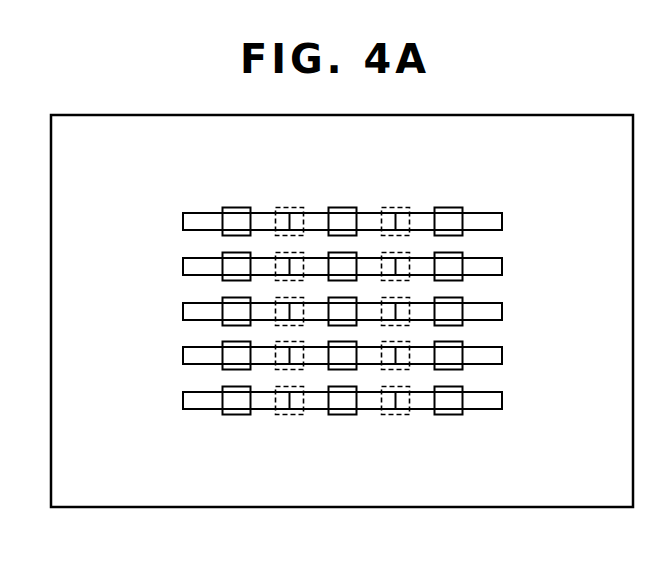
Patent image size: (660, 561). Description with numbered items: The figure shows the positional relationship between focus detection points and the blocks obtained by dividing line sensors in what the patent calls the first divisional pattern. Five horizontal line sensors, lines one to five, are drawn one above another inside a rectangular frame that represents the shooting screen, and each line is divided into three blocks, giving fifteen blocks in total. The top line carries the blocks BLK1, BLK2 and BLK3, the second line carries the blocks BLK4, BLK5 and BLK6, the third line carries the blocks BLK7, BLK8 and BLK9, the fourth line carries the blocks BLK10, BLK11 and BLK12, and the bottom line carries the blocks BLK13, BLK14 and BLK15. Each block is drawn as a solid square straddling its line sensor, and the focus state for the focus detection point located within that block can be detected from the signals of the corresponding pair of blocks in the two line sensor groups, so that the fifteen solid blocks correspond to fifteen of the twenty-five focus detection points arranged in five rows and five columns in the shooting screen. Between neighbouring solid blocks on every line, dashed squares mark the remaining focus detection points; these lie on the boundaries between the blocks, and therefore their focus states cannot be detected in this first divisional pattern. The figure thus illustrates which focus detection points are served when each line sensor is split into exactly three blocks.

The block BLK1 is at (231, 208).
The block BLK2 is at (343, 208).
The block BLK3 is at (455, 208).
The block BLK5 is at (330, 262).
The block BLK8 is at (355, 298).
The block BLK4 is at (225, 258).
The block BLK7 is at (225, 303).
The block BLK10 is at (225, 347).
The block BLK6 is at (461, 258).
The block BLK9 is at (461, 303).
The block BLK12 is at (461, 347).
The block BLK13 is at (237, 414).
The block BLK11 is at (329, 369).
The block BLK14 is at (345, 414).
The block BLK15 is at (452, 414).